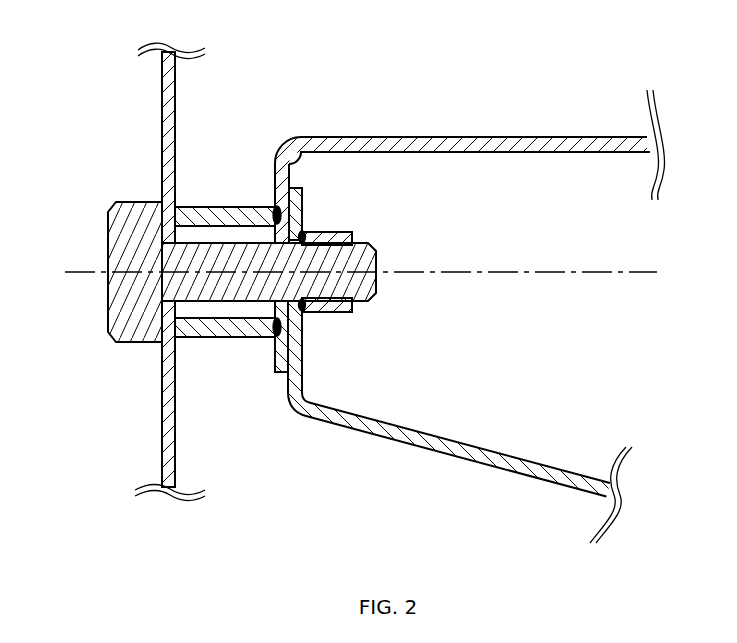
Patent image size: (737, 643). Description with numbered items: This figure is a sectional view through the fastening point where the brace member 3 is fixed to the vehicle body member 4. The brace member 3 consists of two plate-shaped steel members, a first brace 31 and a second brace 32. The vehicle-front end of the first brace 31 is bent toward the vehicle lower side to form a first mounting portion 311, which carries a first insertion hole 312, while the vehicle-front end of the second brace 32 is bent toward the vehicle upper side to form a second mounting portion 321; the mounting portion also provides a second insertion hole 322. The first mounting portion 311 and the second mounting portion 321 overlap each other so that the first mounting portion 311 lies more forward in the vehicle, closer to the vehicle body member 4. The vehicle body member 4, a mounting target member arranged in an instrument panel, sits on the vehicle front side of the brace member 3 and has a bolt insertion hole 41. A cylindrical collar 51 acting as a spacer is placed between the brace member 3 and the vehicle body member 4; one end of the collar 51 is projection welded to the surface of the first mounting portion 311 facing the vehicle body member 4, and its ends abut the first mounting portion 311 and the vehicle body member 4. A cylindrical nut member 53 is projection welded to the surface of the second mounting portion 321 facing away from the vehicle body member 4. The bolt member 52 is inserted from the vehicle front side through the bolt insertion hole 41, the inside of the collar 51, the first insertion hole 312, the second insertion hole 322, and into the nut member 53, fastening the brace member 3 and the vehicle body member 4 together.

The brace member 3 is at (445, 294).
The first brace 31 is at (454, 148).
The first mounting portion 311 is at (282, 192).
The first insertion hole 312 is at (278, 292).
The second brace 32 is at (460, 422).
The second mounting portion 321 is at (299, 337).
The second insertion hole 322 is at (300, 248).
The vehicle body member 4 is at (165, 105).
The bolt insertion hole 41 is at (168, 300).
The collar 51 is at (215, 216).
The bolt member 52 is at (118, 238).
The nut member 53 is at (330, 310).